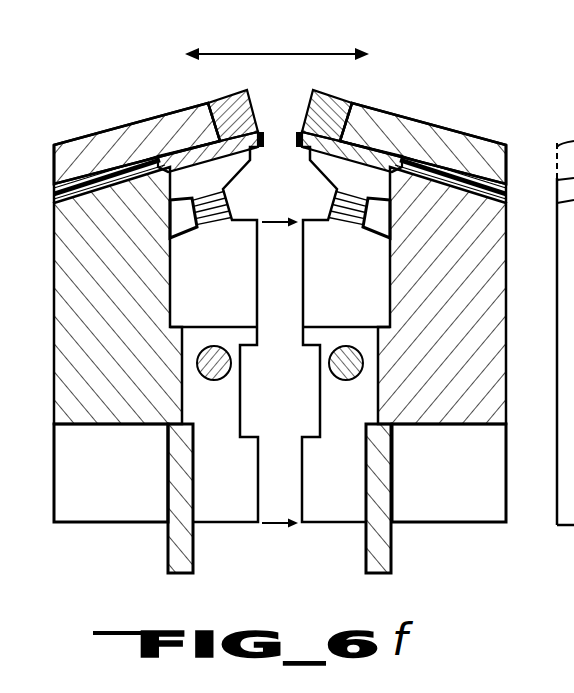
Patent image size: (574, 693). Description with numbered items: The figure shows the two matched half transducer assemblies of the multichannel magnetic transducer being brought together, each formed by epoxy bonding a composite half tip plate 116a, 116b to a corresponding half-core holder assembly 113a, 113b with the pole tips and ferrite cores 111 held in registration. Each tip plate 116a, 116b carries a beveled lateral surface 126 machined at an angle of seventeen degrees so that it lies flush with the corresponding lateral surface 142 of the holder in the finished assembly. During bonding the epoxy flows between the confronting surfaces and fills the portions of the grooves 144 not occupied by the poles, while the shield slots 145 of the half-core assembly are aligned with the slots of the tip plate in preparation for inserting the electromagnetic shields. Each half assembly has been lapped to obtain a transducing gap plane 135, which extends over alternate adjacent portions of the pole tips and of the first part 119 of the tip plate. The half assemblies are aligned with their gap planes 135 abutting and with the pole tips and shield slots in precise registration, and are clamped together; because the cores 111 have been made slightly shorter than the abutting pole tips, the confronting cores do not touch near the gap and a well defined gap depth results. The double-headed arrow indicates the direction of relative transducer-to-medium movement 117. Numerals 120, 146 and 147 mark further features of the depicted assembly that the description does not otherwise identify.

The ferrite cores 111 is at (356, 288).
The half-core holder assembly 113a is at (462, 489).
The half-core holder assembly 113b is at (122, 488).
The composite tip plate 116a is at (403, 118).
The composite tip plate 116b is at (135, 118).
The direction of relative transducer-to-medium movement 117 is at (275, 54).
The first part of the tip plate 119 is at (233, 93).
The block body 120 is at (90, 145).
The beveled lateral surface 126 is at (507, 167).
The transducing gap plane 135 is at (297, 136).
The lateral surface of holder 142 is at (557, 365).
The grooves 144 is at (493, 207).
The shield slots 145 is at (175, 147).
The O-ring 146 is at (345, 381).
The guide bar 147 is at (366, 533).